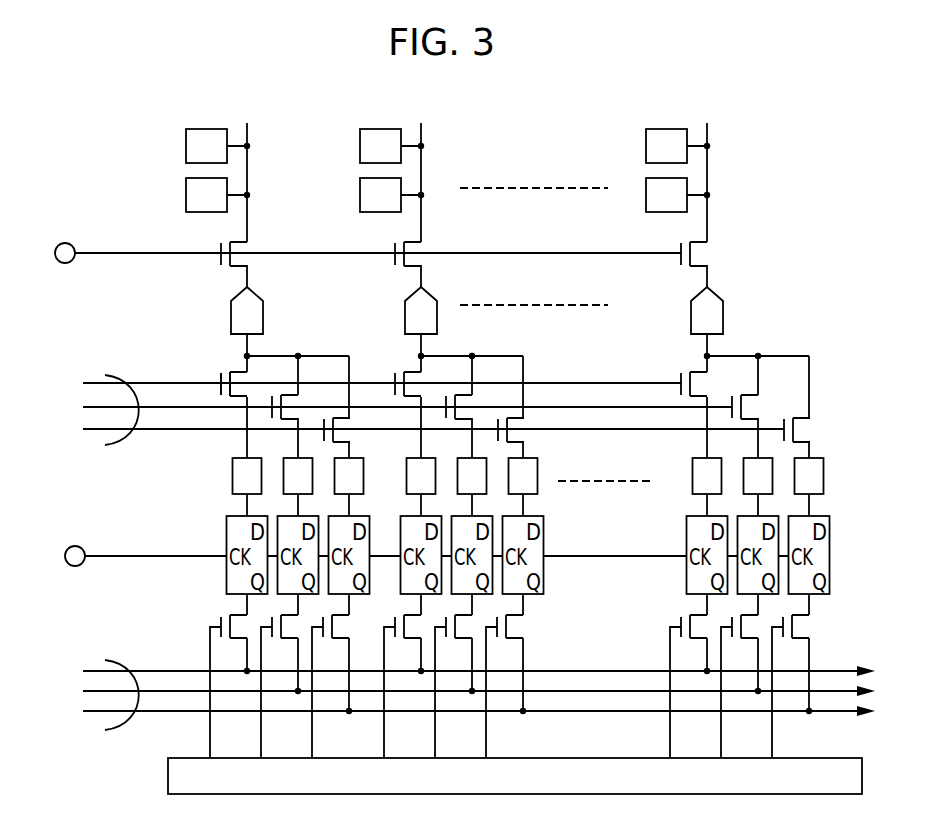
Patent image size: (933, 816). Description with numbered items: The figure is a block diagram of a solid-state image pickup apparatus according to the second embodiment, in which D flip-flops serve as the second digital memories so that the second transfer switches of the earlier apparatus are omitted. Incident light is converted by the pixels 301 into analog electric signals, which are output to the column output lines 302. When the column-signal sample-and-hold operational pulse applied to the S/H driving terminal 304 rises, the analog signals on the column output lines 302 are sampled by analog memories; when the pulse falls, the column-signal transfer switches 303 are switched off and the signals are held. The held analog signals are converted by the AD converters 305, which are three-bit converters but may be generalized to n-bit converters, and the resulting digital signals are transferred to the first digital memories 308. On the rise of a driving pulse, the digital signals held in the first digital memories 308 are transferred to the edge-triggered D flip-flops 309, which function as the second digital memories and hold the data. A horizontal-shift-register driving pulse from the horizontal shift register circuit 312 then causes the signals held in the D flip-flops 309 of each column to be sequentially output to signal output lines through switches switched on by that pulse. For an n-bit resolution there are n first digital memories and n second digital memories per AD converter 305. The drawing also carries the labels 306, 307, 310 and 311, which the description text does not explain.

The pixel 301 is at (668, 128).
The column output line 302 is at (707, 172).
The column-signal transfer switch 303 is at (708, 253).
The S/H driving terminal 304 is at (63, 243).
The AD converter 305 is at (723, 313).
The sampling switch transistor 306 is at (221, 372).
The sampling control signal lines 307 is at (105, 375).
The first digital memory 308 is at (823, 478).
The D flip-flop 309 is at (829, 558).
The clock input terminal 310 is at (75, 546).
The horizontal scanning circuit 311 is at (168, 782).
The horizontal shift register circuit 312 is at (105, 660).